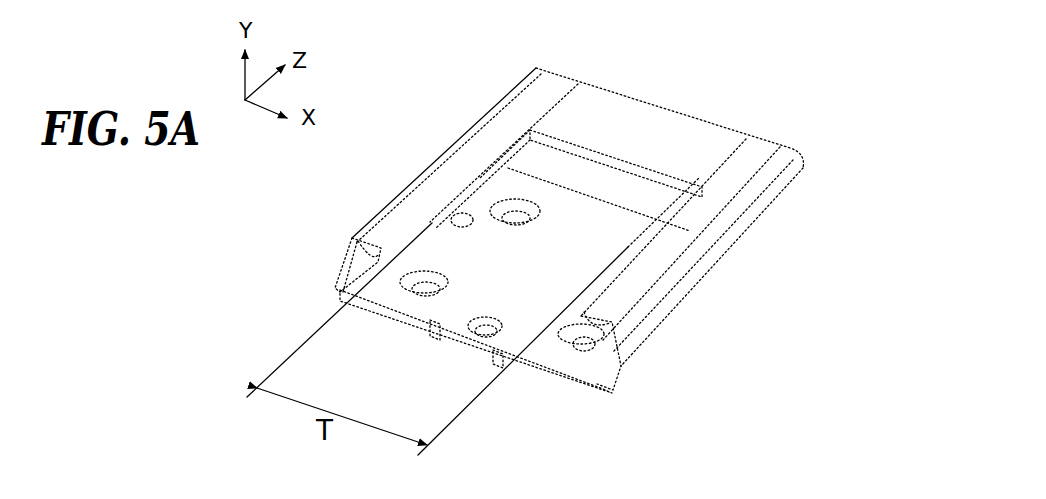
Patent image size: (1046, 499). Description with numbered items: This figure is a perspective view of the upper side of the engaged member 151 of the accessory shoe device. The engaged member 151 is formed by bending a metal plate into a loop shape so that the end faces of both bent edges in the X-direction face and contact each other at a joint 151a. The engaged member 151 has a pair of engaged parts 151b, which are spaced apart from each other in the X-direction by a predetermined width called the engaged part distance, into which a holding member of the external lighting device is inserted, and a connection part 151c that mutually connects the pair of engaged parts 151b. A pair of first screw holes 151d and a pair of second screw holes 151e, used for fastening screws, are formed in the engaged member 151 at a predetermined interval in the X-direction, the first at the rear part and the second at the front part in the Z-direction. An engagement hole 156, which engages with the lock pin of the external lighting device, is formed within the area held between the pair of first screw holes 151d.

The engaged member 151 is at (764, 95).
The joint 151a is at (580, 272).
The engaged parts 151b is at (448, 176).
The connection part 151c is at (618, 114).
The first screw holes 151d is at (418, 290).
The second screw holes 151e is at (517, 216).
The engagement hole 156 is at (480, 330).